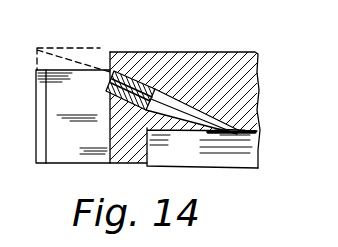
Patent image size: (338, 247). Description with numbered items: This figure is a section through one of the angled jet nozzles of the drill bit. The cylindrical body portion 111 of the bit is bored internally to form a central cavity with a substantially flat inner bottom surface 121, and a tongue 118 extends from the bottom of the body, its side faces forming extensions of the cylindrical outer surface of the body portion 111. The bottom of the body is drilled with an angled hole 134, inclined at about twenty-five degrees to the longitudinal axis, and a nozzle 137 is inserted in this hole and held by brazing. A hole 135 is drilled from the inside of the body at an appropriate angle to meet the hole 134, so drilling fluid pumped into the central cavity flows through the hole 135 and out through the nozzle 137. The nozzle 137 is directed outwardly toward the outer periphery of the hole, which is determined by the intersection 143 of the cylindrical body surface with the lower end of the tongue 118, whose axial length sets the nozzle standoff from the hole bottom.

The cylindrical body portion 111 is at (256, 52).
The tongue 118 is at (57, 160).
The inner bottom surface 121 is at (152, 156).
The angled hole 134 is at (111, 70).
The hole 135 is at (172, 130).
The nozzle 137 is at (146, 72).
The intersection 143 is at (37, 48).